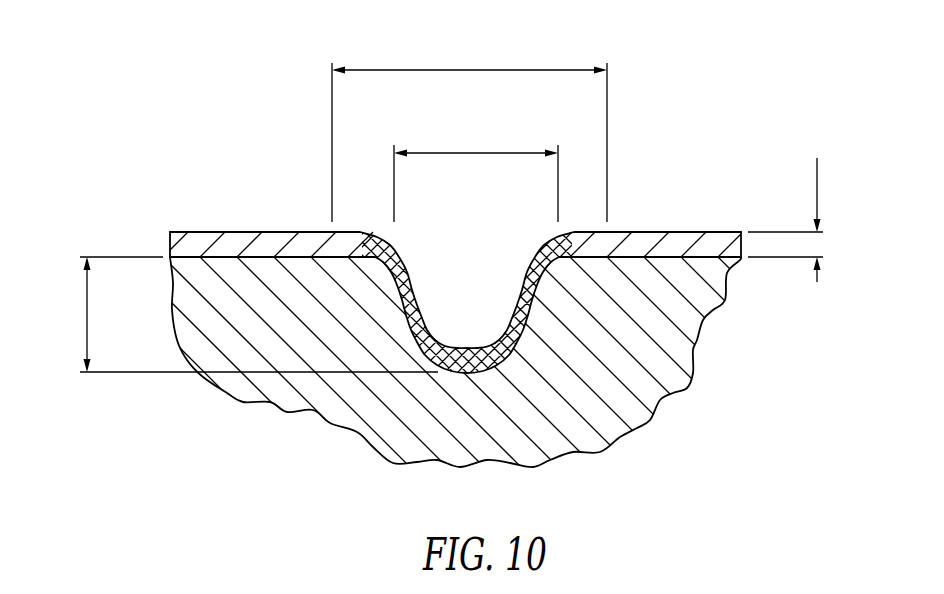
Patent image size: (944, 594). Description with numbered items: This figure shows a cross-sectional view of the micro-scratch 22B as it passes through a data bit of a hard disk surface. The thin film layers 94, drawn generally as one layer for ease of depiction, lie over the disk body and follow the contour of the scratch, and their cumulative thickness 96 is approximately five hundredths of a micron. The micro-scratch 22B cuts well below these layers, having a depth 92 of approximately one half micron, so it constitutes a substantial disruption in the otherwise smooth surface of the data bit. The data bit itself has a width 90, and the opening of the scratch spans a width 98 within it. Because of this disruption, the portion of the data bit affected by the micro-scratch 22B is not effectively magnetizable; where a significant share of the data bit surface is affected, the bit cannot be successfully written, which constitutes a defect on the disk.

The width 90 is at (477, 68).
The groove opening width 98 is at (473, 150).
The depth 92 is at (87, 318).
The coating layer thickness 96 is at (818, 183).
The thin film layers 94 is at (705, 230).
The micro-scratch 22B is at (484, 376).